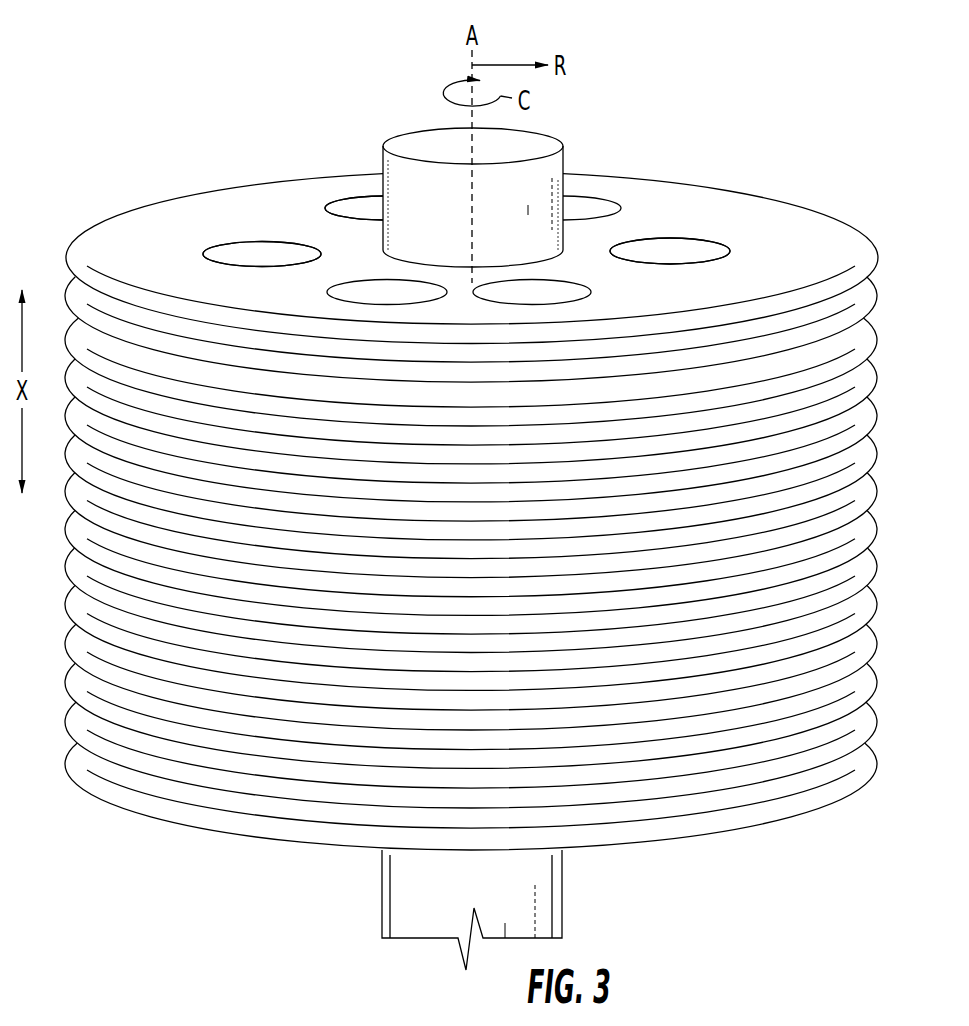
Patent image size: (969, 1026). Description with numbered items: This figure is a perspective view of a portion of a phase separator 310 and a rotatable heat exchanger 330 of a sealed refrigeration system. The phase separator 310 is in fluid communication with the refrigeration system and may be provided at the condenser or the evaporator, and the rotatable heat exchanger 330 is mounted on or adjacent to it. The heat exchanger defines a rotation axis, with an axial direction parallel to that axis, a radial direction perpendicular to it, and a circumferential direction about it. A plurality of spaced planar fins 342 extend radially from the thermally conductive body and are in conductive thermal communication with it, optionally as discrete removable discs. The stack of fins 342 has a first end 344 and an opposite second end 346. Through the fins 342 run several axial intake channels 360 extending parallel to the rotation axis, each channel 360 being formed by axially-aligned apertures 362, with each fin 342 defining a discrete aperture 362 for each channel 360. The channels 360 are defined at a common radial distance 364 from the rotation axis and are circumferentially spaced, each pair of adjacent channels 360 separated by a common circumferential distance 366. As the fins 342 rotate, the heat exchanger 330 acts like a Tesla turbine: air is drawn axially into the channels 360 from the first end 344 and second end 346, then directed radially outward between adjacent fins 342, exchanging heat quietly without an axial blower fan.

The phase separator 310 is at (290, 962).
The rotatable heat exchanger 330 is at (500, 476).
The spaced planar fins 342 is at (500, 489).
The first end 344 is at (195, 188).
The second end 346 is at (236, 833).
The axial intake channels 360 is at (258, 245).
The apertures 362 is at (197, 252).
The radial distance 364 is at (500, 282).
The circumferential distance 366 is at (335, 217).